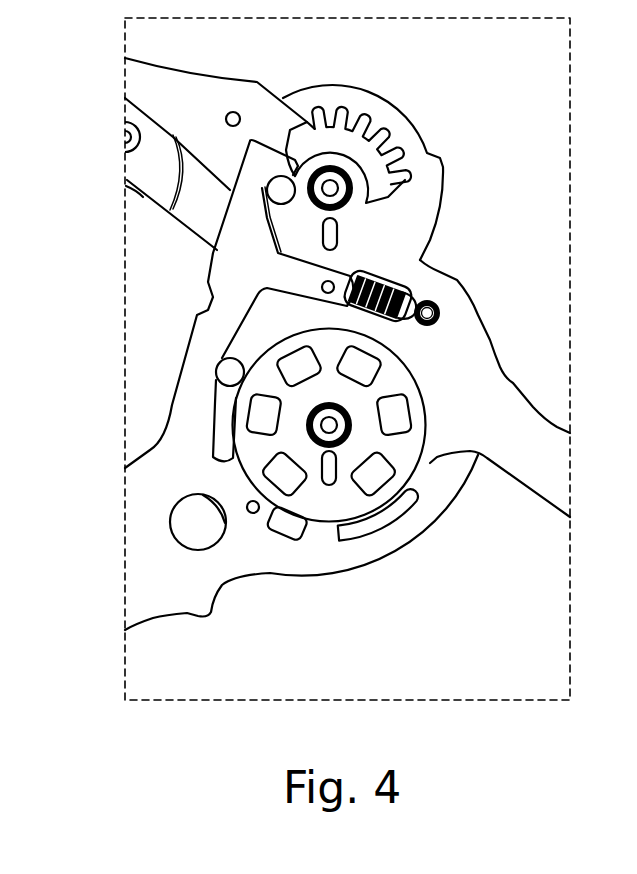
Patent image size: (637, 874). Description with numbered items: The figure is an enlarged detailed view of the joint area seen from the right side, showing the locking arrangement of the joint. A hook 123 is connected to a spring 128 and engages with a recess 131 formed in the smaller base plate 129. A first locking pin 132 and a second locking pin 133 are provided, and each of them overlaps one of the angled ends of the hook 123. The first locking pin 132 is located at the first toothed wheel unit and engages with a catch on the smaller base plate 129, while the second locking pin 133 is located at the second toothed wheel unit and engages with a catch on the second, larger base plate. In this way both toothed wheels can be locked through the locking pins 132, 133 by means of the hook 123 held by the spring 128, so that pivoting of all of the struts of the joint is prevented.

The hook 123 is at (250, 240).
The spring 128 is at (376, 281).
The smaller base plate 129 is at (532, 462).
The recess 131 is at (410, 293).
The first locking pin 132 is at (234, 371).
The second locking pin 133 is at (282, 196).